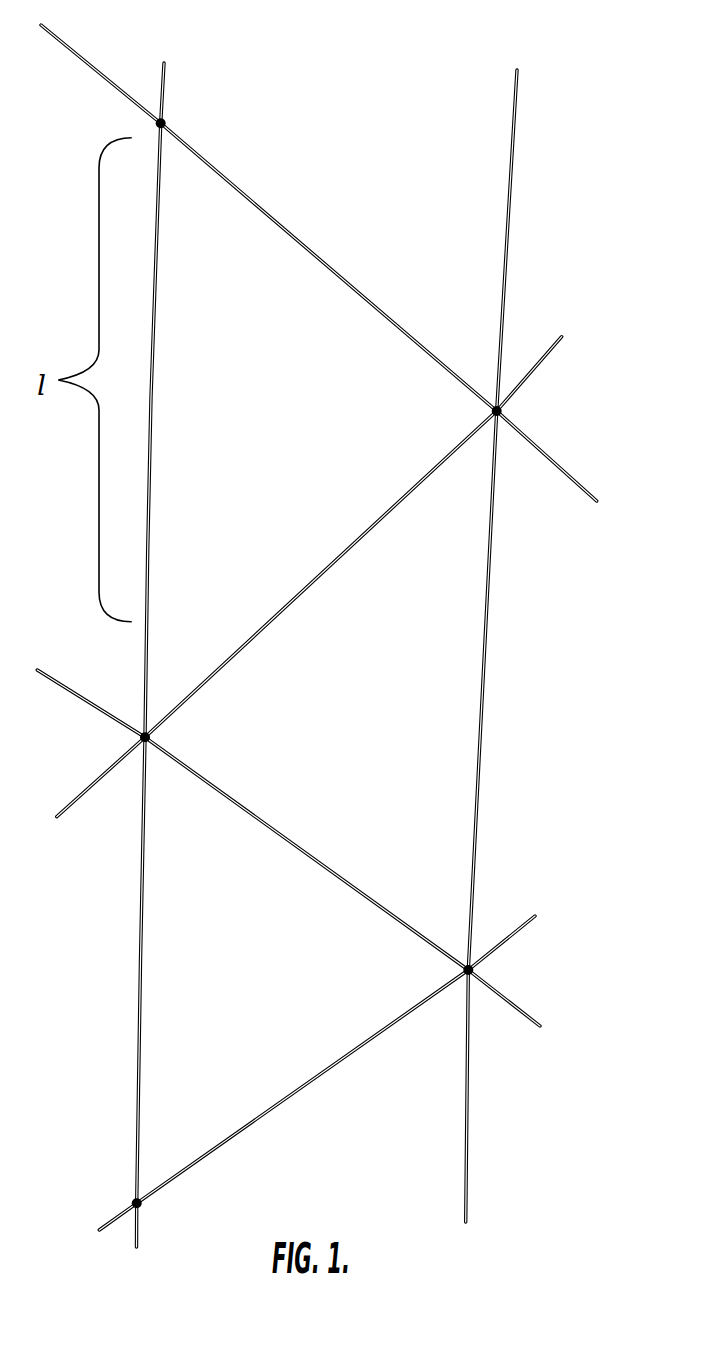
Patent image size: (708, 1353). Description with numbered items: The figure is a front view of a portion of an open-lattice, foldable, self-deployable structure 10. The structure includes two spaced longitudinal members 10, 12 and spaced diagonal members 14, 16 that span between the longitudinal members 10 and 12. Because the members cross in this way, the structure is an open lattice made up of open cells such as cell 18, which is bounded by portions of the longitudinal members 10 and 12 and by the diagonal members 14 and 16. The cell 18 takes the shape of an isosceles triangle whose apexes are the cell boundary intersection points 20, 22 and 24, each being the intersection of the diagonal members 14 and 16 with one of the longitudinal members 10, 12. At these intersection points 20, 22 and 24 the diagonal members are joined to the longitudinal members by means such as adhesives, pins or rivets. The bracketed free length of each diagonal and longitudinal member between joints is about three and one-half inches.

The longitudinal member 10 is at (151, 397).
The longitudinal member 12 is at (508, 233).
The diagonal member 14 is at (309, 247).
The diagonal member 16 is at (329, 571).
The cell 18 is at (296, 446).
The cell boundary intersection point 20 is at (149, 737).
The cell boundary intersection point 22 is at (164, 120).
The cell boundary intersection point 24 is at (500, 411).